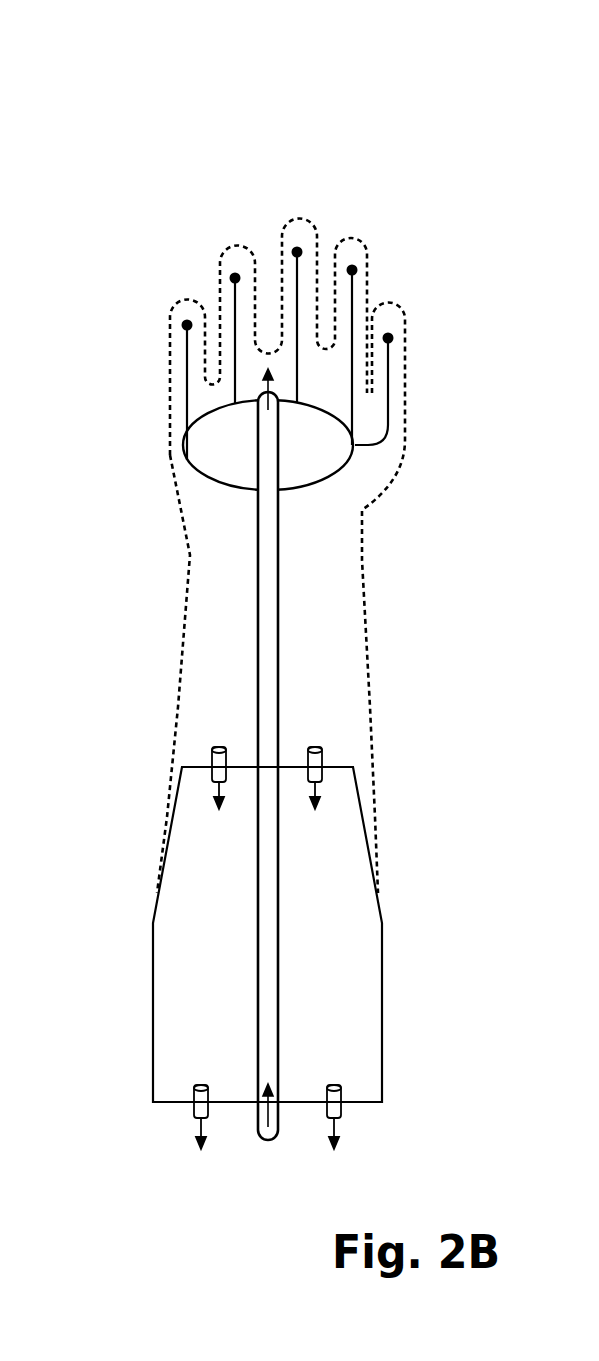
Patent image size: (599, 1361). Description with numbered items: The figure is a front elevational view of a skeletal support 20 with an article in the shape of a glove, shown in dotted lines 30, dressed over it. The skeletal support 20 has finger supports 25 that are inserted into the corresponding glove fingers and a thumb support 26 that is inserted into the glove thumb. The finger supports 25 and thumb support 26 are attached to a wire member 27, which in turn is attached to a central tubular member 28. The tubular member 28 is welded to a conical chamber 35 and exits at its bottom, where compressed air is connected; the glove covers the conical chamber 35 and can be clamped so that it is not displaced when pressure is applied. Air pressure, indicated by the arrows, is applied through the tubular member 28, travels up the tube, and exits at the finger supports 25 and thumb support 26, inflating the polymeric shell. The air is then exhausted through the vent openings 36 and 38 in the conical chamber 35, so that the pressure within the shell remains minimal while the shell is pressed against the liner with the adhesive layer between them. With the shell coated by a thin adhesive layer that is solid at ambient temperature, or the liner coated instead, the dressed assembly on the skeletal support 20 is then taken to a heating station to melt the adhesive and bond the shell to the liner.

The skeletal support 20 is at (380, 113).
The finger supports 25 is at (187, 338).
The thumb support 26 is at (390, 354).
The wire member 27 is at (185, 457).
The tubular member 28 is at (258, 625).
The dotted lines 30 is at (175, 707).
The conical chamber 35 is at (153, 927).
The air vent openings 36 is at (221, 745).
The air vent openings 38 is at (203, 1083).